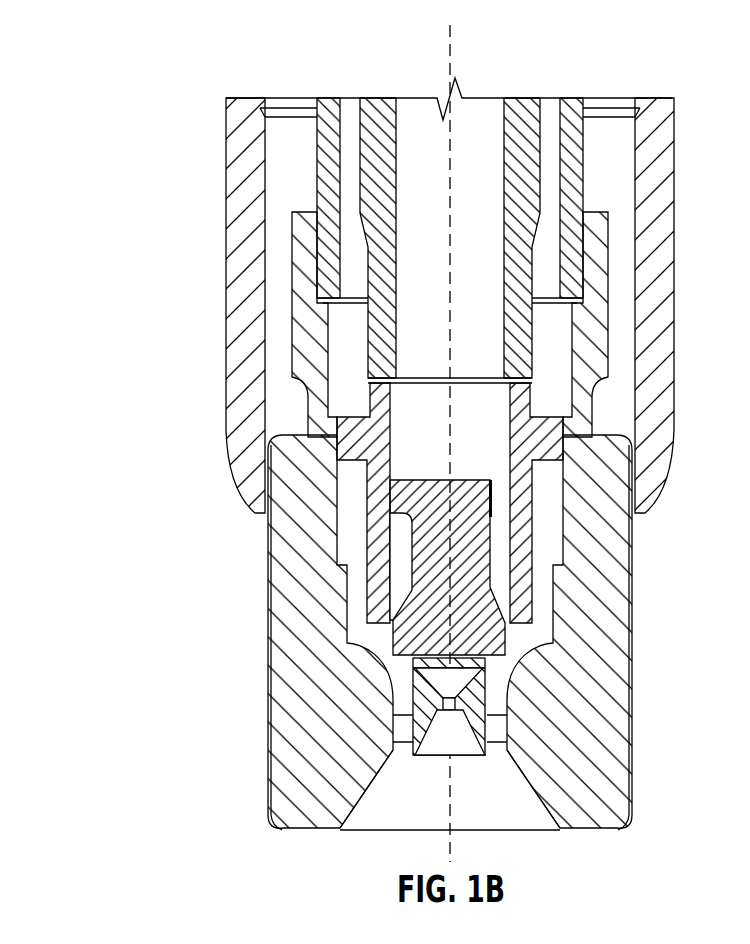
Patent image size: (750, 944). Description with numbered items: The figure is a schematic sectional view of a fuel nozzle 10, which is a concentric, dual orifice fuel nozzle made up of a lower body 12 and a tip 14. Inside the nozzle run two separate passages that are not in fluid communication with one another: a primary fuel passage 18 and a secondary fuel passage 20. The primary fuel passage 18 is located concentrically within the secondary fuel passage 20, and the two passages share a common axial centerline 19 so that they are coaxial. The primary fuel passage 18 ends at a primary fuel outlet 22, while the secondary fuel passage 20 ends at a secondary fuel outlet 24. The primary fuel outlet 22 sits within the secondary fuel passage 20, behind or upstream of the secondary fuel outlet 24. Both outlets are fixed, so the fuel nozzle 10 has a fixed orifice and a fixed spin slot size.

The fuel nozzle 10 is at (127, 112).
The lower body 12 is at (205, 228).
The tip 14 is at (253, 693).
The primary fuel passage 18 is at (497, 573).
The common axial centerline 19 is at (450, 50).
The secondary fuel passage 20 is at (540, 623).
The primary fuel outlet 22 is at (455, 762).
The secondary fuel outlet 24 is at (373, 833).